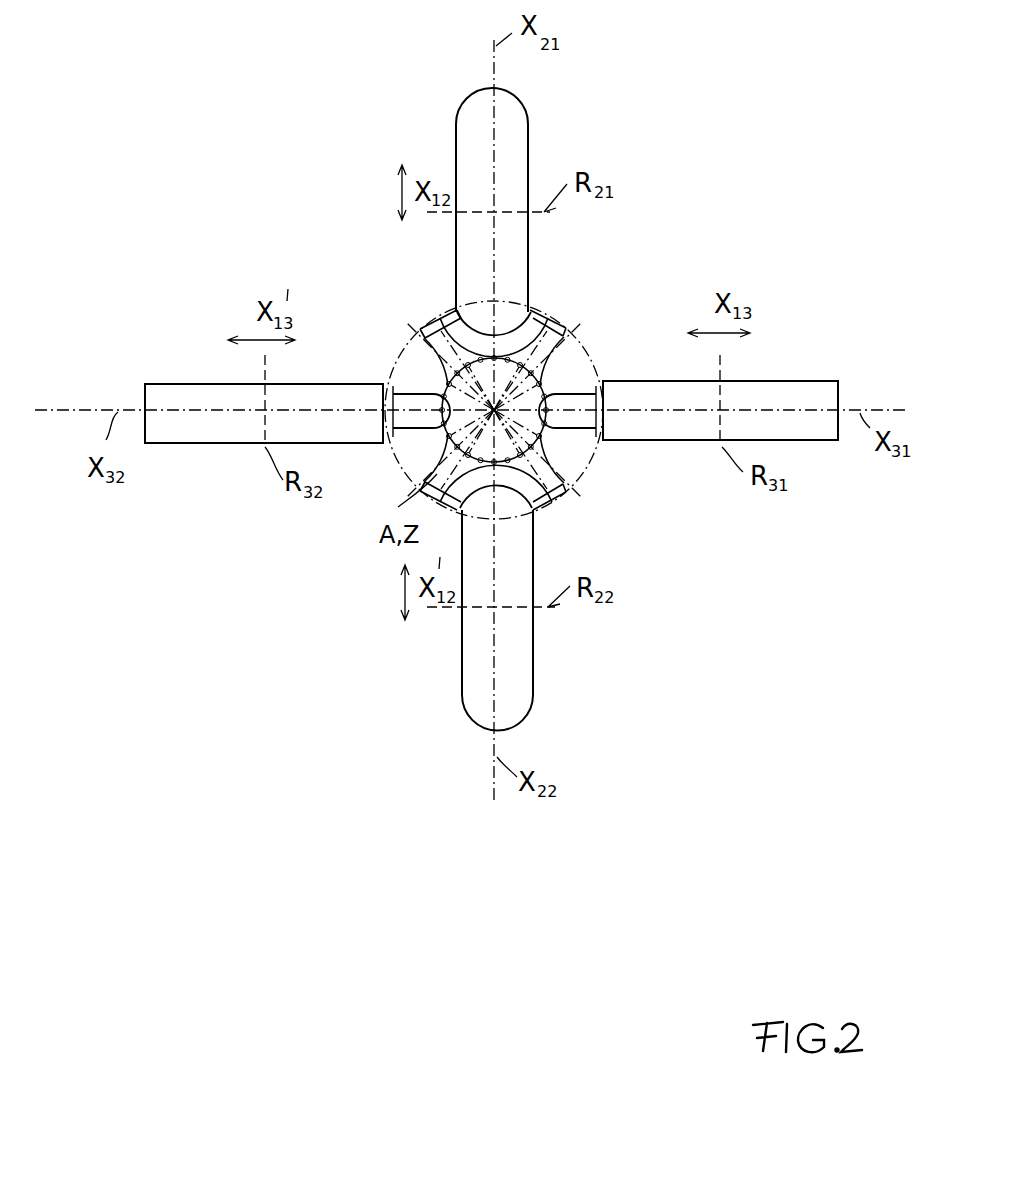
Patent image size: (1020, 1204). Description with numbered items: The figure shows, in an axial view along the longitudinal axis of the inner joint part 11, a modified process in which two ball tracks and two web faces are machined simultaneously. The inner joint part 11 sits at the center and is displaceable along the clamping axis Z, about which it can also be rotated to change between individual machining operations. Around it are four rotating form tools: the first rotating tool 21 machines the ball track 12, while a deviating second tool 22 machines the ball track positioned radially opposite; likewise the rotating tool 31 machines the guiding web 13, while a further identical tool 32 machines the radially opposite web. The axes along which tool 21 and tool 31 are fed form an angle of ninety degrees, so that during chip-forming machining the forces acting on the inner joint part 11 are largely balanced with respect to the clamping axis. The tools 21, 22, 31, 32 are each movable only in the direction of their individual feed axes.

The inner joint part 11 is at (396, 292).
The ball track 12 is at (532, 311).
The guiding web 13 is at (604, 392).
The first rotating tool 21 is at (540, 133).
The second tool 22 is at (545, 656).
The second rotating tool 31 is at (789, 375).
The further identical tool 32 is at (187, 390).